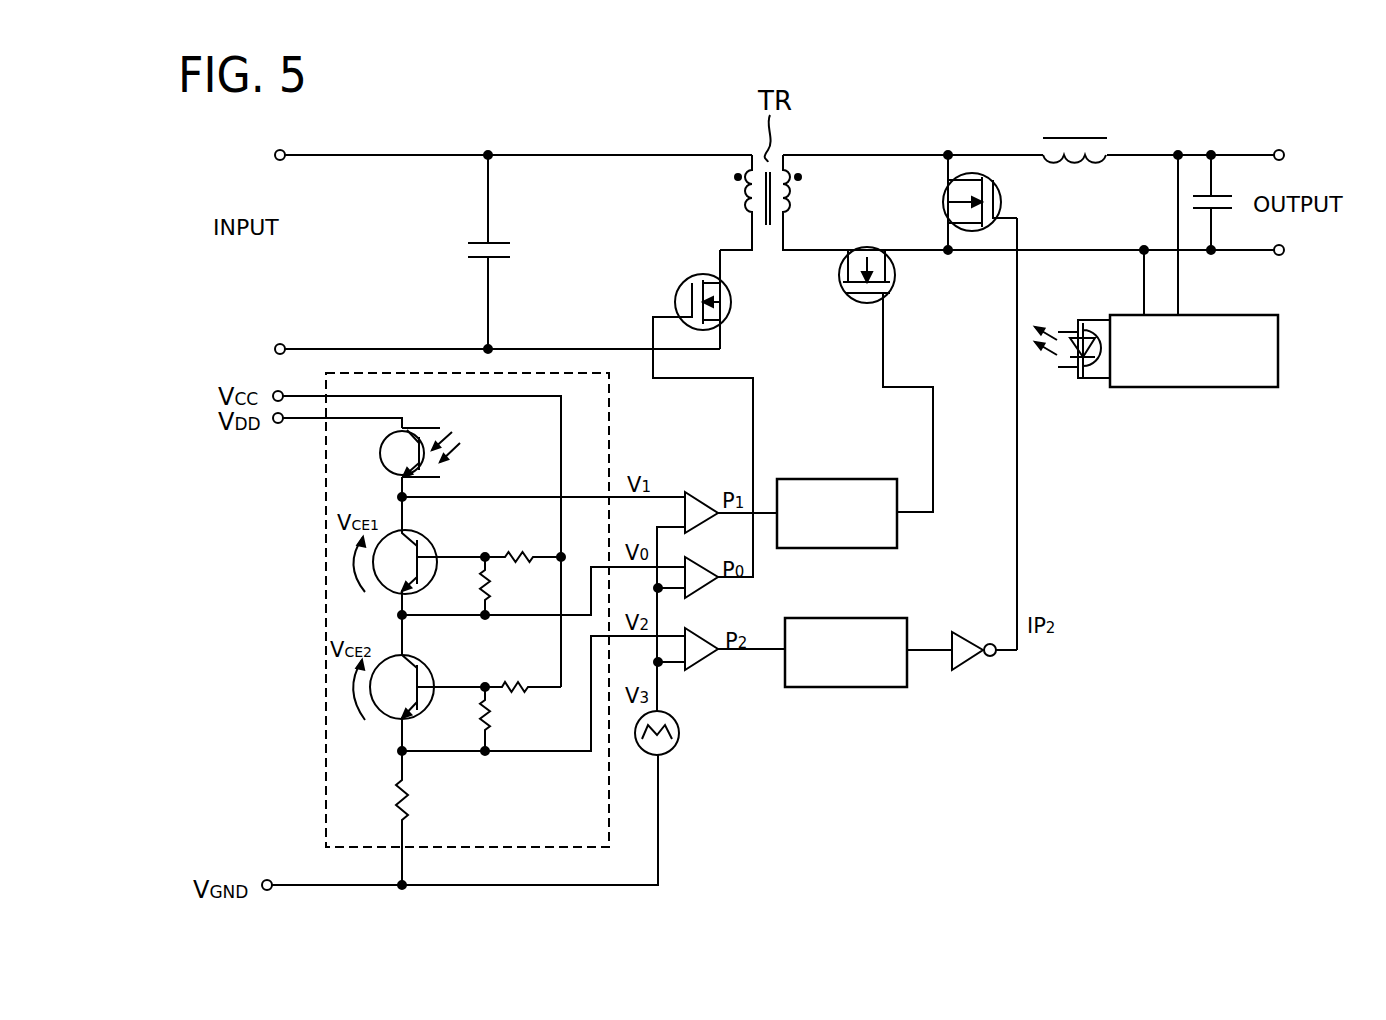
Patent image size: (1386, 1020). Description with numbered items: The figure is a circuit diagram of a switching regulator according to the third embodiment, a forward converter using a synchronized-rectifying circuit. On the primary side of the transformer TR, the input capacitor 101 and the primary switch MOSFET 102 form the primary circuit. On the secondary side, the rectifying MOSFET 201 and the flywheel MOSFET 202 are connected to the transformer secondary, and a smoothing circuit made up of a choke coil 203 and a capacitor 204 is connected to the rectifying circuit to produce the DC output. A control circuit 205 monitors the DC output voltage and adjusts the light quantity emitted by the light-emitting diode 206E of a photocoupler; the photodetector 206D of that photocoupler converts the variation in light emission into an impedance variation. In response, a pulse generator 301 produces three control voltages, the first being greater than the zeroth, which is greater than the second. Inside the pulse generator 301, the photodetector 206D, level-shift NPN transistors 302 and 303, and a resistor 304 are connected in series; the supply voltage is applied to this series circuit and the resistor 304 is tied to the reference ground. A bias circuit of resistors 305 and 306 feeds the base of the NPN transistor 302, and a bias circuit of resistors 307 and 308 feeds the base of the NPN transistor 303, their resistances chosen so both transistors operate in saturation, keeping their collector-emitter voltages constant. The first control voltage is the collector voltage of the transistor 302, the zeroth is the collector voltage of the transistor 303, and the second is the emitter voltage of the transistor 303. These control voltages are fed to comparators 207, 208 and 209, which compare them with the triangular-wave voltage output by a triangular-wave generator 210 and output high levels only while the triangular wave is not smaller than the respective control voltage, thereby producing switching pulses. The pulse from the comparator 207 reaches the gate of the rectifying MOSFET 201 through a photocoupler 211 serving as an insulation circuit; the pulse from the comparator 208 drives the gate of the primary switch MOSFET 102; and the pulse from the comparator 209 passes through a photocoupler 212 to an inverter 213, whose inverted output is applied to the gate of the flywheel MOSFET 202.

The input capacitor 101 is at (508, 245).
The primary switch MOSFET 102 is at (732, 302).
The rectifying MOSFET 201 is at (890, 290).
The flywheel MOSFET 202 is at (968, 173).
The choke coil 203 is at (1107, 150).
The capacitor 204 is at (1233, 195).
The control circuit 205 is at (1217, 387).
The photodetector 206D is at (380, 455).
The light-emitting diode 206E is at (1068, 370).
The comparator 207 is at (690, 495).
The comparator 208 is at (707, 585).
The comparator 209 is at (708, 655).
The triangular-wave generator 210 is at (678, 740).
The photocoupler 211 is at (822, 479).
The photocoupler 212 is at (823, 687).
The inverter 213 is at (963, 667).
The pulse generator 301 is at (325, 785).
The level-shift NPN transistor 302 is at (397, 587).
The level-shift NPN transistor 303 is at (387, 713).
The resistor 304 is at (403, 777).
The resistor 305 is at (518, 553).
The resistor 306 is at (490, 587).
The resistor 307 is at (510, 683).
The resistor 308 is at (488, 717).